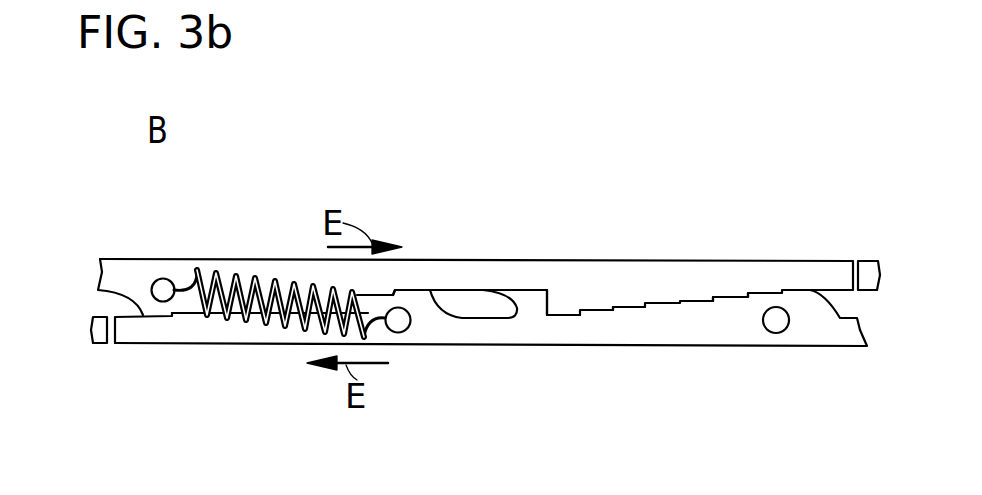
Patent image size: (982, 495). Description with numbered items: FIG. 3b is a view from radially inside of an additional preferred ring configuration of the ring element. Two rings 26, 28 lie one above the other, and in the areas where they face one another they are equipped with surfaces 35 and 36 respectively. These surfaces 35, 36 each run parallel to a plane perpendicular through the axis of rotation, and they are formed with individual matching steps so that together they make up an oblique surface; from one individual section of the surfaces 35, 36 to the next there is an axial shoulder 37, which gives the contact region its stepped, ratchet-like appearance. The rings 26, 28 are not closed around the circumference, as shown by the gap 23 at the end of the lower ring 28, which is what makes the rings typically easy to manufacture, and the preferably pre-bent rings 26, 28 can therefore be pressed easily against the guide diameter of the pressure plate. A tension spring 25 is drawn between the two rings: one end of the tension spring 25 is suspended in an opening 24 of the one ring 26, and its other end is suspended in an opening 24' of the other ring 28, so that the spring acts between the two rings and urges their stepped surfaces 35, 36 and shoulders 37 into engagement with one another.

The gap 23 is at (110, 350).
The opening 24 is at (148, 251).
The opening 24' is at (426, 363).
The tension spring 25 is at (242, 330).
The ring 26 is at (720, 275).
The ring 28 is at (665, 333).
The surface 35 is at (393, 288).
The surface 36 is at (188, 318).
The axial shoulder 37 is at (728, 305).